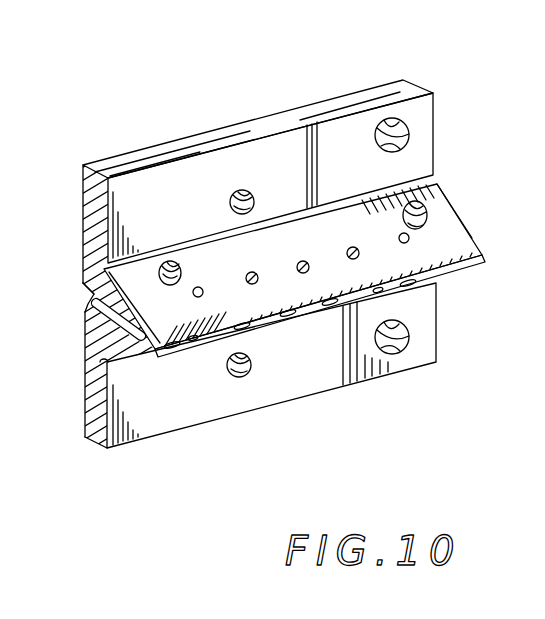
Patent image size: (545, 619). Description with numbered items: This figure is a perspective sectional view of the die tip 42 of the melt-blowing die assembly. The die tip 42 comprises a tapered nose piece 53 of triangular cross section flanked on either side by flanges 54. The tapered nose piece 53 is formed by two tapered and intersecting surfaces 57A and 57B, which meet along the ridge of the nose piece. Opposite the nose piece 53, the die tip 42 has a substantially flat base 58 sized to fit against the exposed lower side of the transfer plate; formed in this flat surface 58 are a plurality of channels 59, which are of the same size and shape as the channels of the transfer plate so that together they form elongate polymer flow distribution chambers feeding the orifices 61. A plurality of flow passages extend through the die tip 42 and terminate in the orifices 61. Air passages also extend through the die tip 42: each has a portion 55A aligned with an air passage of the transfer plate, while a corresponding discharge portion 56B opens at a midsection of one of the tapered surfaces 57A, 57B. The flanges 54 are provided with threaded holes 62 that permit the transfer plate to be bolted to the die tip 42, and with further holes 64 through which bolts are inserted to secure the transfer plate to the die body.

The die tip 42 is at (280, 156).
The tapered nose piece 53 is at (212, 278).
The flanges 54 is at (143, 190).
The air passage portion 55A is at (258, 275).
The air passage portion 56B is at (242, 328).
The tapered surface 57A is at (437, 273).
The tapered surface 57B is at (438, 225).
The base 58 is at (82, 212).
The channels 59 is at (87, 303).
The orifices 61 is at (98, 354).
The threaded holes 62 is at (243, 193).
The holes 64 is at (408, 122).